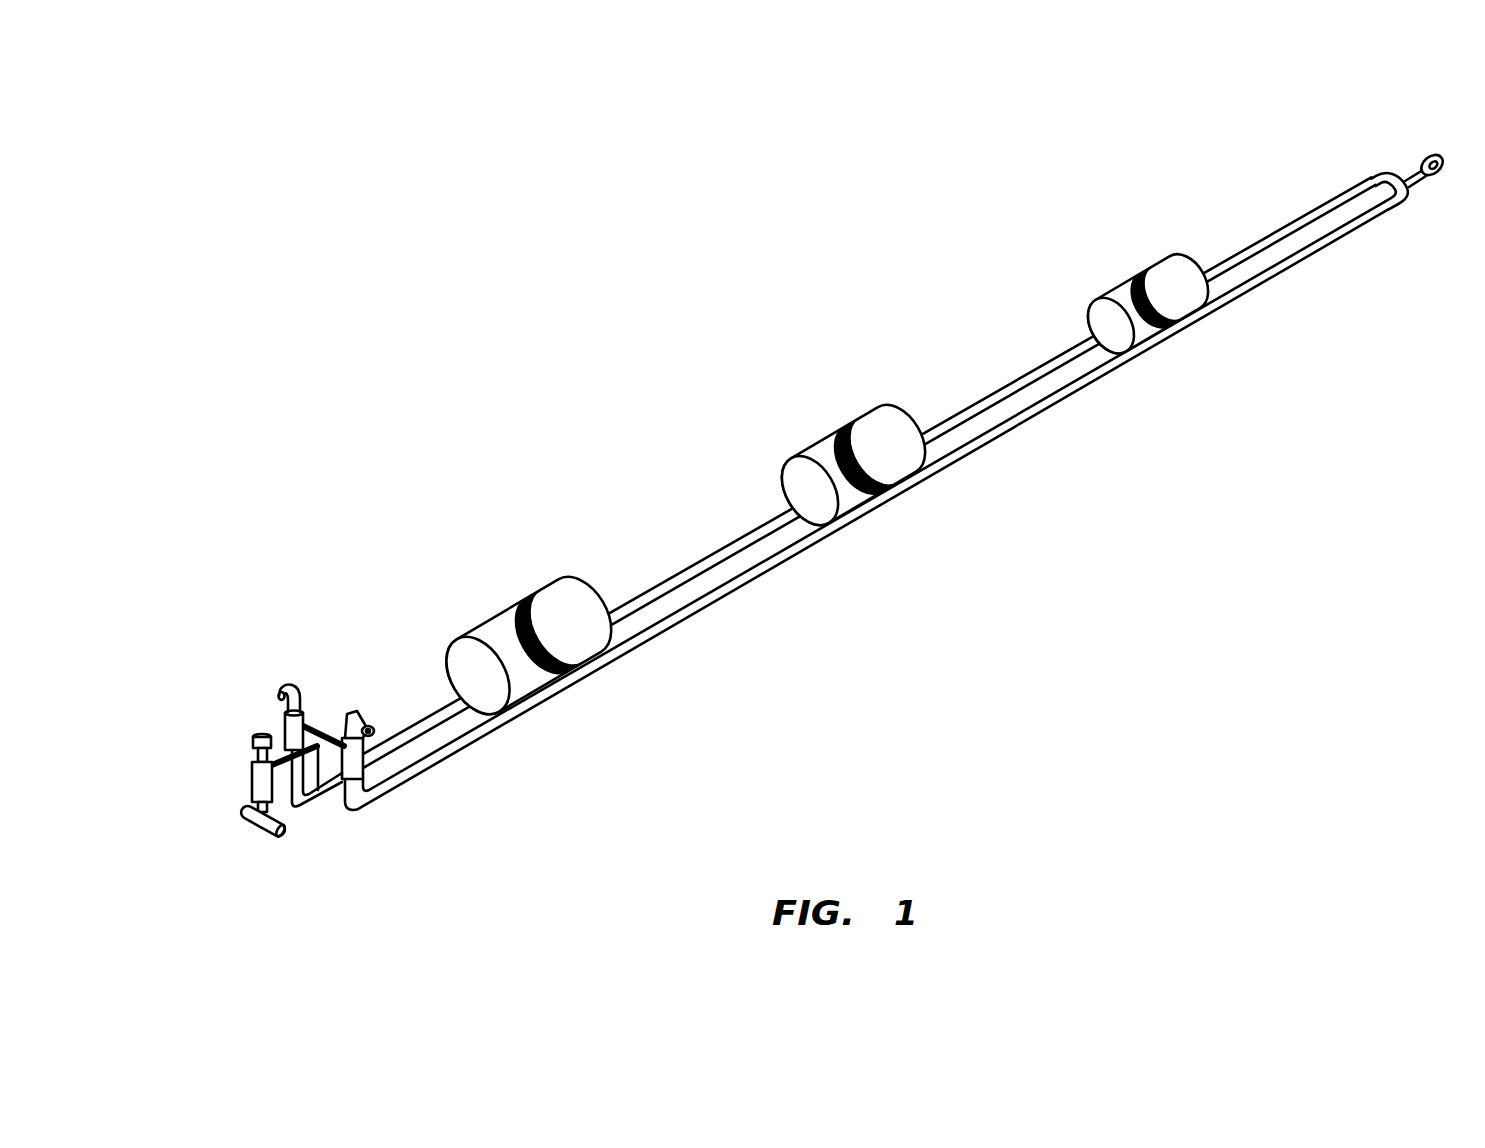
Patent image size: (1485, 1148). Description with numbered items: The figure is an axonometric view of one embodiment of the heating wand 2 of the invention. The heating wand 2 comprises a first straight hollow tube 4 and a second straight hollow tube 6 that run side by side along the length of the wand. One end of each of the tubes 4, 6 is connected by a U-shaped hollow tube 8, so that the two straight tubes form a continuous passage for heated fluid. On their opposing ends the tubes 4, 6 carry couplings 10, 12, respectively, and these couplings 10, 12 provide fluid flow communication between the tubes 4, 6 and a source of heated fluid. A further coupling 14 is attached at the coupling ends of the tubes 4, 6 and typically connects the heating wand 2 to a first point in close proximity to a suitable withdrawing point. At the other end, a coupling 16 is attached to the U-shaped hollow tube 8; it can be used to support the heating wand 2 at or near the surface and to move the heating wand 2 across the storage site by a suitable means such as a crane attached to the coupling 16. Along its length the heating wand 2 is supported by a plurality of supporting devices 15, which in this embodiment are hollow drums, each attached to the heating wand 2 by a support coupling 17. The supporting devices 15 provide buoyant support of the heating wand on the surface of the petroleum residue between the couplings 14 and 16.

The heating wand 2 is at (769, 580).
The first straight hollow tube 4 is at (424, 773).
The second straight hollow tube 6 is at (685, 566).
The U-shaped hollow tube 8 is at (1388, 172).
The coupling 10 is at (371, 714).
The coupling 12 is at (289, 679).
The coupling 14 is at (250, 773).
The supporting devices 15 is at (550, 582).
The coupling 16 is at (1438, 152).
The support coupling 17 is at (570, 680).